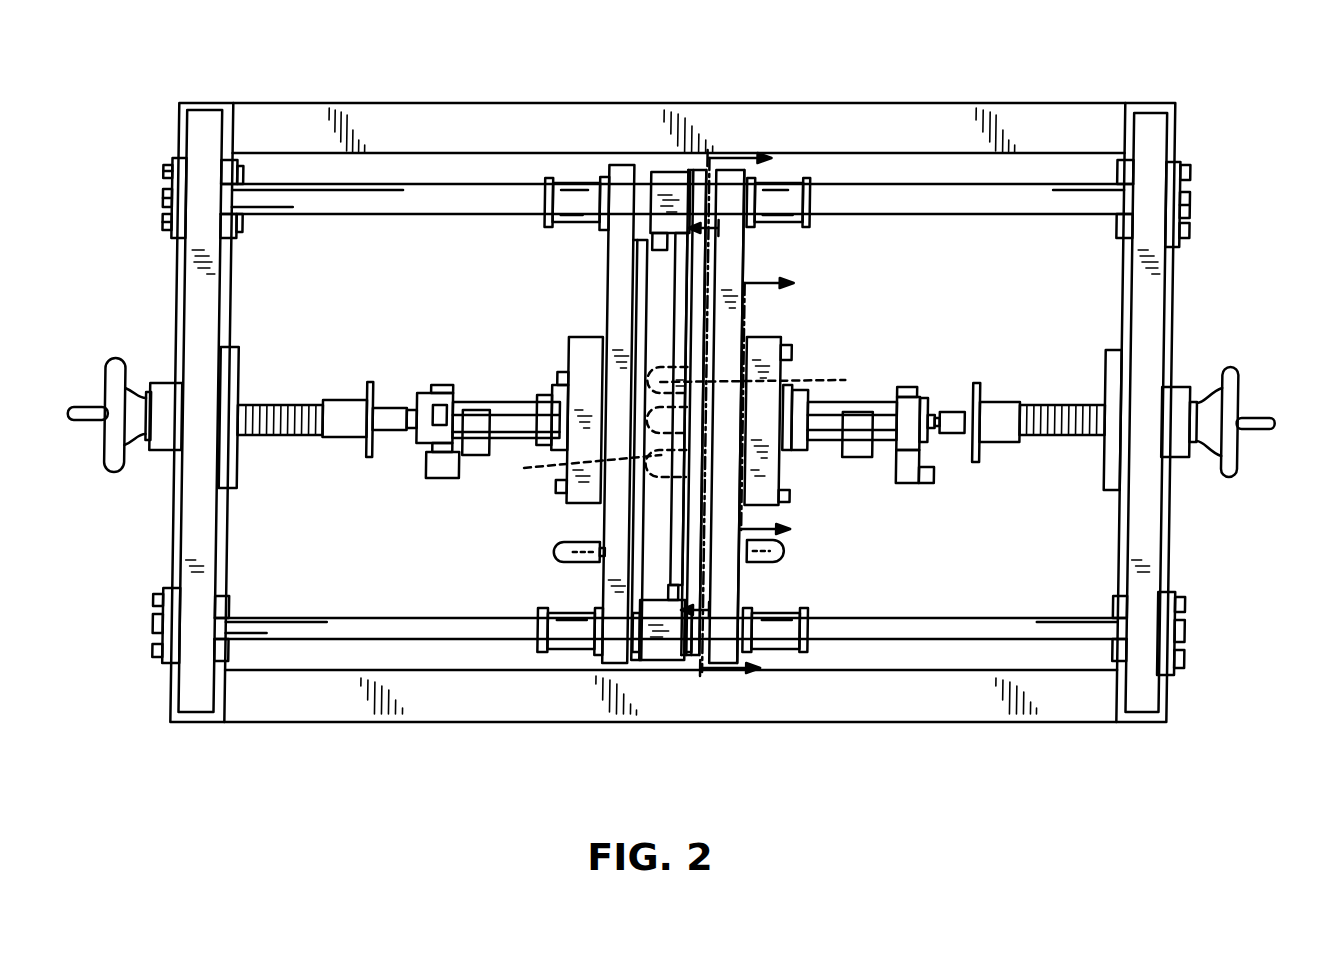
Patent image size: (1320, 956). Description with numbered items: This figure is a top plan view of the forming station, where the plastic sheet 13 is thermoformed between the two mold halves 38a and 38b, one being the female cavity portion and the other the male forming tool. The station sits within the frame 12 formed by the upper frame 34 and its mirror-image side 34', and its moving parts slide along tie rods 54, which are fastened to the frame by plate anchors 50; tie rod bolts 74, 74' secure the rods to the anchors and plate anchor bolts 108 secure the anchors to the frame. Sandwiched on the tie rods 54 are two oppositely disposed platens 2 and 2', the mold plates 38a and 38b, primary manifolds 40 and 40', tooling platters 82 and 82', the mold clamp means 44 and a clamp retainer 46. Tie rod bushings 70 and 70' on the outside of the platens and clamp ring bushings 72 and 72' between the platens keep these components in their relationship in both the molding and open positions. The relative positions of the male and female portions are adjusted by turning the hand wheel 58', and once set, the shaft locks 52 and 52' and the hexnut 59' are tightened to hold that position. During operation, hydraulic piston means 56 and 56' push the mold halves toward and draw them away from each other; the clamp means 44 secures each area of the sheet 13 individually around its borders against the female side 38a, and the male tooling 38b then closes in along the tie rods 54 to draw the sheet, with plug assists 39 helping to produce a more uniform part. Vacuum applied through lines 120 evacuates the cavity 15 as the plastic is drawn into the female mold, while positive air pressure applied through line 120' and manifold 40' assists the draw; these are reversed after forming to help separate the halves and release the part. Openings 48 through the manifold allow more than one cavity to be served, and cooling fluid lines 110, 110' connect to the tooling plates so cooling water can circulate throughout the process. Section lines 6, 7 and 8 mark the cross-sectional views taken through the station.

The platen 2 is at (592, 466).
The platen 2' is at (755, 464).
The section line 6 is at (736, 416).
The section line 7 is at (776, 406).
The section line 8 is at (707, 423).
The frame 12 is at (1028, 118).
The plastic sheet 13 is at (670, 338).
The cavity 15 is at (575, 469).
The upper frame 34 is at (150, 439).
The upright post 34' is at (1090, 448).
The mold plate 38a is at (637, 585).
The mold plate 38b is at (693, 348).
The plug assist 39 is at (761, 420).
The primary manifold 40 is at (545, 442).
The primary manifold 40' is at (797, 422).
The mold clamp means 44 is at (680, 560).
The clamp retainer 46 is at (695, 655).
The openings 48 is at (1110, 472).
The plate anchor 50 is at (172, 160).
The shaft lock 52 is at (326, 404).
The shaft lock 52' is at (1018, 410).
The tie rod 54 is at (1015, 210).
The hydraulic piston means 56 is at (458, 449).
The hydraulic piston means 56' is at (884, 459).
The handwheel 58' is at (688, 416).
The hexnut 59' is at (672, 389).
The tie rod bushing 70 is at (526, 418).
The tie rod bushing 70' is at (826, 413).
The clamp ring bushing 72 is at (637, 364).
The clamp ring bushing 72' is at (718, 360).
The tie rod bolt 74 is at (116, 426).
The bolts 74' is at (1220, 418).
The tooling platter 82 is at (635, 513).
The tooling platter 82' is at (736, 409).
The plate anchor bolt 108 is at (165, 170).
The cooling fluid line 110 is at (532, 570).
The pin 110' is at (809, 545).
The vacuum line 120 is at (510, 442).
The air pressure line 120' is at (842, 408).